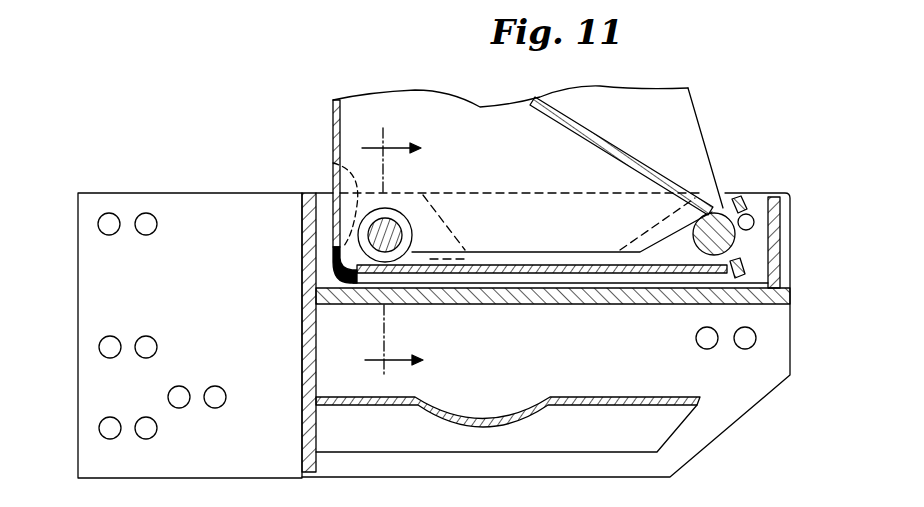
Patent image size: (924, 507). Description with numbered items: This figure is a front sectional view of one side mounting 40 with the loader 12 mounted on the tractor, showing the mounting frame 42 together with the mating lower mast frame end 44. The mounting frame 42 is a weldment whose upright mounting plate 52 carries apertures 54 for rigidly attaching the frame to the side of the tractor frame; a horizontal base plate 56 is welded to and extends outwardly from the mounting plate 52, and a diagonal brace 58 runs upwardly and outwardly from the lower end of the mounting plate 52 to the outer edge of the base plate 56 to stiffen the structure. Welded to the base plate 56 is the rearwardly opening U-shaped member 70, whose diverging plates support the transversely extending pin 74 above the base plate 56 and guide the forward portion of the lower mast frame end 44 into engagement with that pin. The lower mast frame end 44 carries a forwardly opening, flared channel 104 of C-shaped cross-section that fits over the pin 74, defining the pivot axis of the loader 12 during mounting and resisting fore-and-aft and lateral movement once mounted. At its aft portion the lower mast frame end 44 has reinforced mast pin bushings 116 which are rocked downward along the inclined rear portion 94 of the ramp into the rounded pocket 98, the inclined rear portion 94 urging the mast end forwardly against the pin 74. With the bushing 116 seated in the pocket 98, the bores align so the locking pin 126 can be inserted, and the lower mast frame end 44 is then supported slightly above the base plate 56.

The side mounting 40 is at (250, 112).
The mounting frame 42 is at (808, 320).
The lower mast frame end 44 is at (732, 160).
The upright mounting plate 52 is at (130, 204).
The apertures 54 is at (101, 419).
The horizontal base plate 56 is at (651, 308).
The diagonal brace 58 is at (660, 425).
The U-shaped member 70 is at (790, 209).
The pin 74 is at (742, 213).
The inclined rear portion 94 is at (333, 162).
The rounded pocket 98 is at (302, 318).
The forwardly opening channel 104 is at (731, 257).
The mast pin bushing 116 is at (406, 218).
The locking pin 126 is at (403, 242).
The loader 12 is at (411, 252).